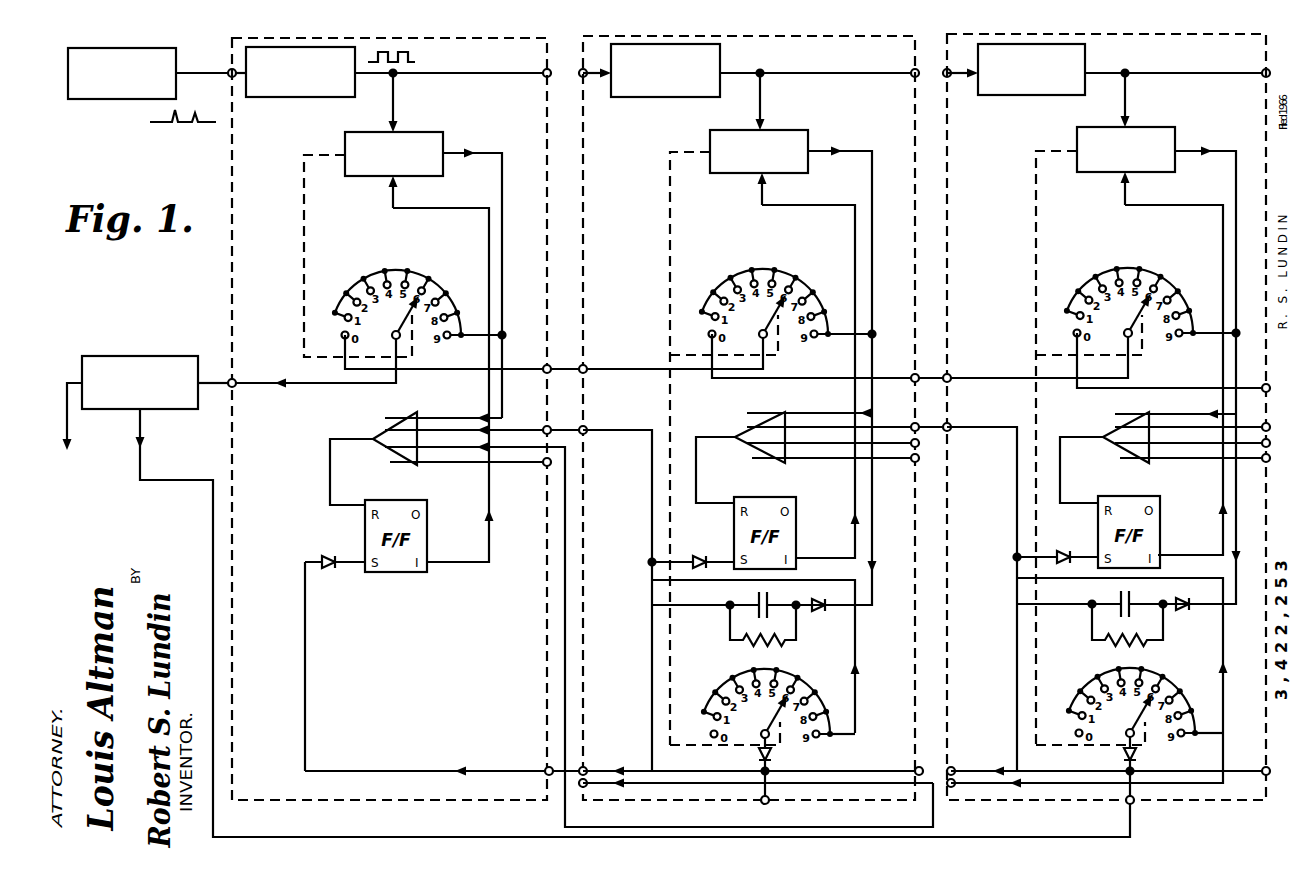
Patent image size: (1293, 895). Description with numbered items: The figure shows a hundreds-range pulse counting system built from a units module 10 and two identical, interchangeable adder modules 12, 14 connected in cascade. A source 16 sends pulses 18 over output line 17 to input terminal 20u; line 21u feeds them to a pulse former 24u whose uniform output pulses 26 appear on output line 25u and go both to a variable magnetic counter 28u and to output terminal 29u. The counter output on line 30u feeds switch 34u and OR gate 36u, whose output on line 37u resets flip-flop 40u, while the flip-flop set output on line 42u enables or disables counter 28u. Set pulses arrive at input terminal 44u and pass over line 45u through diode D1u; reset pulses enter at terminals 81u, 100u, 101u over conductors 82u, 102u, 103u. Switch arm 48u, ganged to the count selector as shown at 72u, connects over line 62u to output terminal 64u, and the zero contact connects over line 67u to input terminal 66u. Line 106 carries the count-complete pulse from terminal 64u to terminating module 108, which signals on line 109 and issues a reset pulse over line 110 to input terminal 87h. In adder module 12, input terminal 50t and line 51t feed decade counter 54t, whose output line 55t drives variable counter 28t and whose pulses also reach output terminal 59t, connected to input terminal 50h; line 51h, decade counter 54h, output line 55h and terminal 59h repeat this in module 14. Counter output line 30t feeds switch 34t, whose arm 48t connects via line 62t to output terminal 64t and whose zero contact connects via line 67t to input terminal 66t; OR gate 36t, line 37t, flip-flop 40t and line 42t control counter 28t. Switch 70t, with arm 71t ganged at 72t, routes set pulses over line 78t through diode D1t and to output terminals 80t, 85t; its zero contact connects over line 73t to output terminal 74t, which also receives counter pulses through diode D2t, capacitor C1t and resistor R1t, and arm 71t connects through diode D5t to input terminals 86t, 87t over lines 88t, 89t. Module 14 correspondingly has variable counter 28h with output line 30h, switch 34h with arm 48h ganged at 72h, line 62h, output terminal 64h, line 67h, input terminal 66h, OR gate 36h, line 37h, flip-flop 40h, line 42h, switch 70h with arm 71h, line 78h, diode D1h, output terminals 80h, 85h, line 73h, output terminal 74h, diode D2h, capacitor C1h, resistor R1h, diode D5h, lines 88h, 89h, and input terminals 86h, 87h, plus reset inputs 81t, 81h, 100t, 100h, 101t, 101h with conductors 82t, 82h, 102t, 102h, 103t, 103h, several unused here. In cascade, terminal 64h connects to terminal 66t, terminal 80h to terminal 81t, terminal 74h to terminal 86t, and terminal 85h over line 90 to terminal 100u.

The units module 10 is at (232, 298).
The adder module 12 is at (583, 212).
The adder module 14 is at (947, 200).
The source of pulses 16 is at (108, 100).
The output line 17 is at (204, 70).
The input pulses 18 is at (172, 122).
The input terminal 20u is at (232, 80).
The line 21u is at (240, 78).
The pulse former 24u is at (283, 98).
The output line 25u is at (447, 75).
The output pulses 26 is at (425, 48).
The variable magnetic counter 28u is at (400, 92).
The variable magnetic counter 28t is at (722, 176).
The variable magnetic counter 28h is at (1110, 175).
The output terminal 29u is at (544, 78).
The output line 30u is at (494, 153).
The output line 30t is at (834, 151).
The output line 30h is at (1210, 151).
The switch 34u is at (358, 275).
The switch 34t is at (806, 275).
The switch 34h is at (1170, 275).
The OR gate 36u is at (394, 426).
The OR gate 36t is at (760, 450).
The OR gate 36h is at (1120, 450).
The line 37u is at (330, 490).
The line 37t is at (696, 480).
The gate output line (hundreds) 37h is at (1060, 480).
The flip-flop 40u is at (420, 574).
The flip-flop 40t is at (746, 503).
The flip-flop 40h is at (1108, 503).
The line 42u is at (436, 208).
The line 42t is at (825, 205).
The flip-flop output to counter (hundreds) 42h is at (1186, 205).
The input terminal 44u is at (547, 767).
The line 45u is at (305, 684).
The switch arm 48u is at (396, 317).
The switch arm 48t is at (762, 316).
The switch arm 48h is at (1127, 315).
The input terminal 50t is at (578, 68).
The input terminal 50h is at (944, 68).
The input line 51t is at (588, 78).
The line 51h is at (952, 78).
The decade magnetic counter 54t is at (668, 97).
The fixed decade counter 54h is at (1033, 96).
The output line 55t is at (750, 73).
The output line 55h is at (1113, 73).
The output terminal 59t is at (912, 70).
The hundreds stage output junction 59h is at (1263, 70).
The line 62u is at (313, 385).
The line 62t is at (612, 371).
The line 62h is at (982, 378).
The output terminal 64u is at (236, 380).
The output terminal 64t is at (586, 365).
The output terminal 64h is at (950, 375).
The input terminal 66u is at (545, 365).
The input terminal 66t is at (912, 375).
The stage output terminal (hundreds) 66h is at (1264, 384).
The line 67u is at (438, 371).
The line 67t is at (795, 378).
The zero contact line (hundreds) 67h is at (1152, 388).
The multiposition switch 70t is at (794, 670).
The second selector switch (hundreds) 70h is at (1168, 676).
The contact arm 71t is at (762, 716).
The switch arm 71h is at (1127, 715).
The ganging linkage 72u is at (304, 232).
The ganging linkage 72t is at (670, 222).
The counter module (hundreds) 72h is at (1036, 202).
The line 73t is at (655, 752).
The line 73h is at (1020, 758).
The output terminal 74t is at (586, 767).
The output terminal 74h is at (954, 768).
The line 78t is at (648, 434).
The line 78h is at (1014, 432).
The output terminal 80t is at (587, 428).
The output terminal 80h is at (950, 424).
The input terminal 81u is at (549, 426).
The input terminal 81t is at (916, 423).
The input terminal 81h is at (1264, 423).
The conductor 82u is at (510, 418).
The gate input line (tens) 82t is at (878, 420).
The gate input line (hundreds) 82h is at (1200, 414).
The output terminal 85t is at (586, 788).
The output terminal 85h is at (952, 788).
The input terminal 86t is at (916, 774).
The input terminal 86h is at (1262, 775).
The input terminal 87t is at (761, 803).
The input terminal 87h is at (1126, 803).
The line 88t is at (866, 762).
The switch output line (hundreds) 88h is at (1246, 766).
The line 89t is at (755, 792).
The diode output line (hundreds) 89h is at (1122, 786).
The line 90 is at (567, 538).
The input terminal 100u is at (545, 452).
The input terminal 100t is at (912, 448).
The gate input (hundreds) 100h is at (1266, 448).
The input terminal 101u is at (547, 468).
The input terminal 101t is at (912, 464).
The gate input (hundreds) 101h is at (1267, 464).
The conductor 102u is at (433, 462).
The gate input (tens) 102t is at (806, 452).
The gate input (hundreds) 102h is at (1164, 452).
The conductor 103u is at (487, 512).
The counter reset line (tens) 103t is at (855, 495).
The counter reset line (hundreds) 103h is at (1221, 495).
The line 106 is at (215, 388).
The terminating module 108 is at (107, 356).
The output line 109 is at (72, 428).
The line 110 is at (178, 482).
The capacitor C1t is at (754, 597).
The capacitor C1h is at (1116, 596).
The diode D1u is at (328, 572).
The diode D1t is at (698, 554).
The diode D1h is at (1062, 550).
The diode D2t is at (828, 610).
The diode D2h is at (1188, 609).
The diode D5t is at (772, 756).
The diode D5h is at (1137, 756).
The resistor R1t is at (740, 641).
The resistor (hundreds) R1h is at (1103, 641).